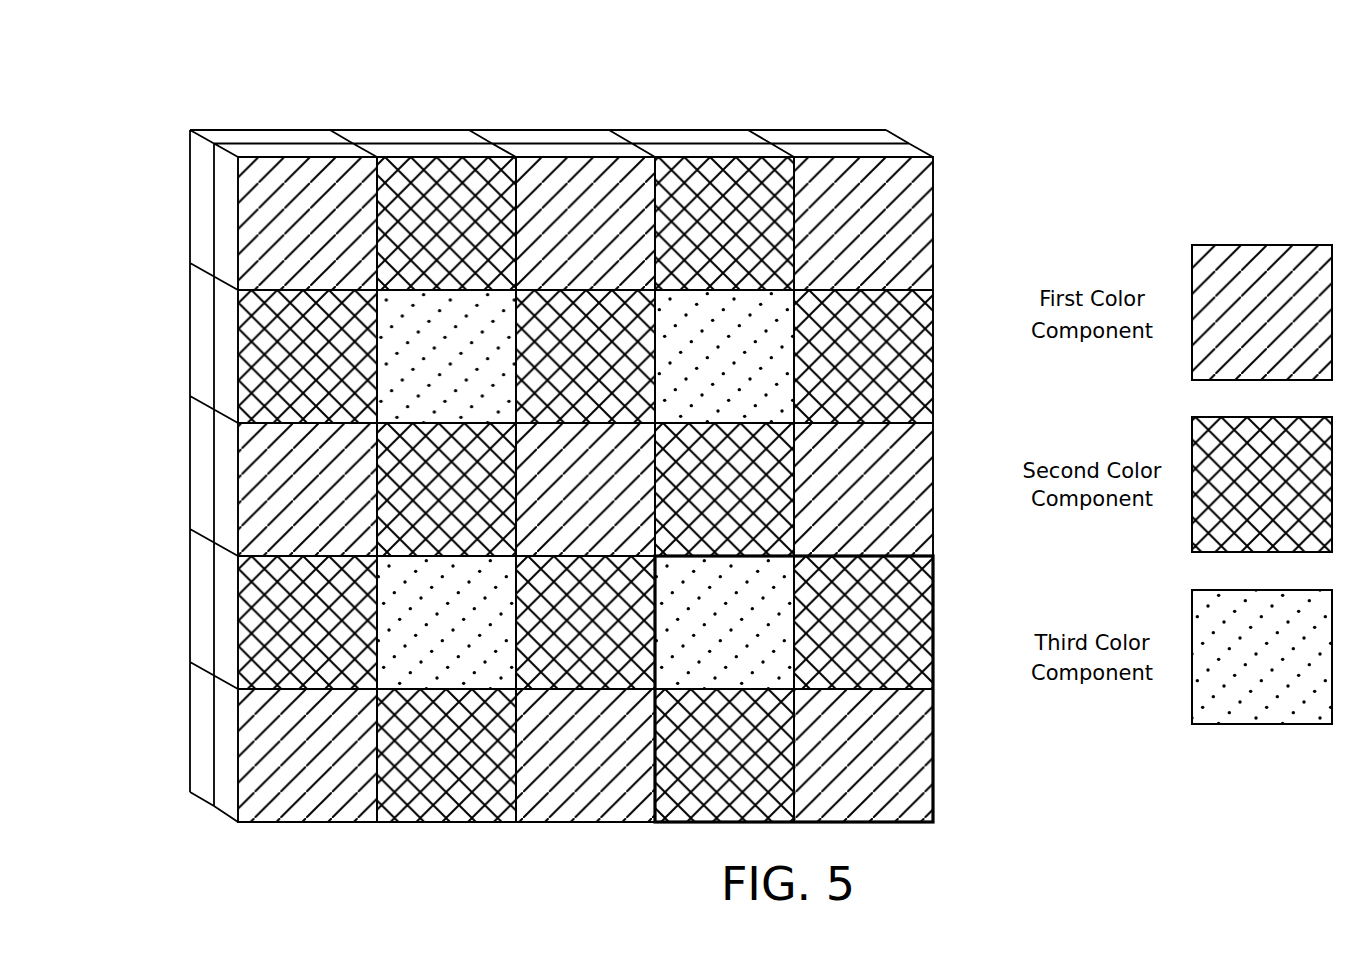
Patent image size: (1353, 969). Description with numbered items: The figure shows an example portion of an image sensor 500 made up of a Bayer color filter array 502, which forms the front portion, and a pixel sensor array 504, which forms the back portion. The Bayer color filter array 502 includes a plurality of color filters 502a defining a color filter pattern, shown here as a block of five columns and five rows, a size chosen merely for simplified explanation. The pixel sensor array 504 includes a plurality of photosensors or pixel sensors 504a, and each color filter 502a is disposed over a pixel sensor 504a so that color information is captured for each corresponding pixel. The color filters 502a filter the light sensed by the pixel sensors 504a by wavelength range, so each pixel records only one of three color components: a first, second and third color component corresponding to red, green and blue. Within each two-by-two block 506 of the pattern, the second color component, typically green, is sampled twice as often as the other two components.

The image sensor 500 is at (133, 77).
The Bayer color filter array 502 is at (548, 469).
The color filter 502a is at (855, 148).
The pixel sensor array 504 is at (489, 425).
The pixel sensor 504a is at (414, 143).
The 2x2 block 506 is at (933, 751).